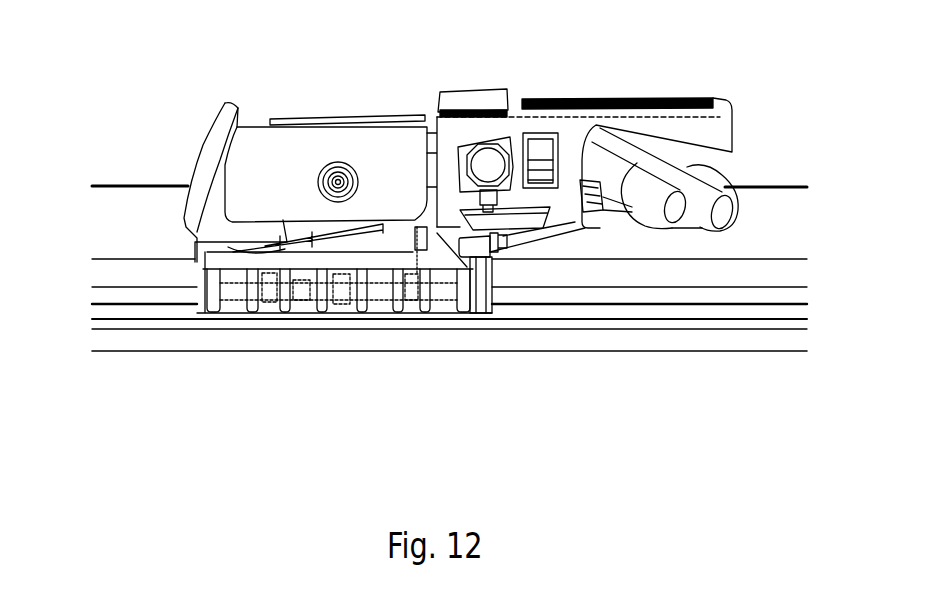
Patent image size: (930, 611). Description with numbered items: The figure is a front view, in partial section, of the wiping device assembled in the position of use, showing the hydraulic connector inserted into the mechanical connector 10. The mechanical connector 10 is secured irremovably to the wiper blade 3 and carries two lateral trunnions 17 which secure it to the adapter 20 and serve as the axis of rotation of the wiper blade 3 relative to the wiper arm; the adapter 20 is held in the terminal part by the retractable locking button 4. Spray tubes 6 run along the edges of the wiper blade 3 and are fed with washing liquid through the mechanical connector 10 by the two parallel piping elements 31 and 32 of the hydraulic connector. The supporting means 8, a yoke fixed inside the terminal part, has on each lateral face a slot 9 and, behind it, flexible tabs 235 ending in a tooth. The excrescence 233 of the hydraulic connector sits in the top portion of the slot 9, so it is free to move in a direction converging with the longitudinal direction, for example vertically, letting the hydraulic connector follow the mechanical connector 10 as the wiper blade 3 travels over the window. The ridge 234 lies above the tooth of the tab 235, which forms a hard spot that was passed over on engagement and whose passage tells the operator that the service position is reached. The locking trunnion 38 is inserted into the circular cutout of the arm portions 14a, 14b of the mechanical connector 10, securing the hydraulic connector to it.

The wiper blade 3 is at (120, 228).
The spray tubes 6 is at (120, 287).
The adapter 20 is at (267, 153).
The trunnions 17 is at (333, 160).
The retractable locking button 4 is at (443, 92).
The arm 14a is at (468, 147).
The slot 9 is at (492, 130).
The flexible tabs 235 is at (538, 147).
The ridges 234 is at (557, 150).
The supporting means 8 is at (668, 118).
The piping element 31 is at (710, 193).
The piping element 32 is at (655, 217).
The locking trunnions 38 is at (468, 235).
The excrescence 233 is at (493, 190).
The arm 14b is at (483, 170).
The mechanical connector 10 is at (342, 247).